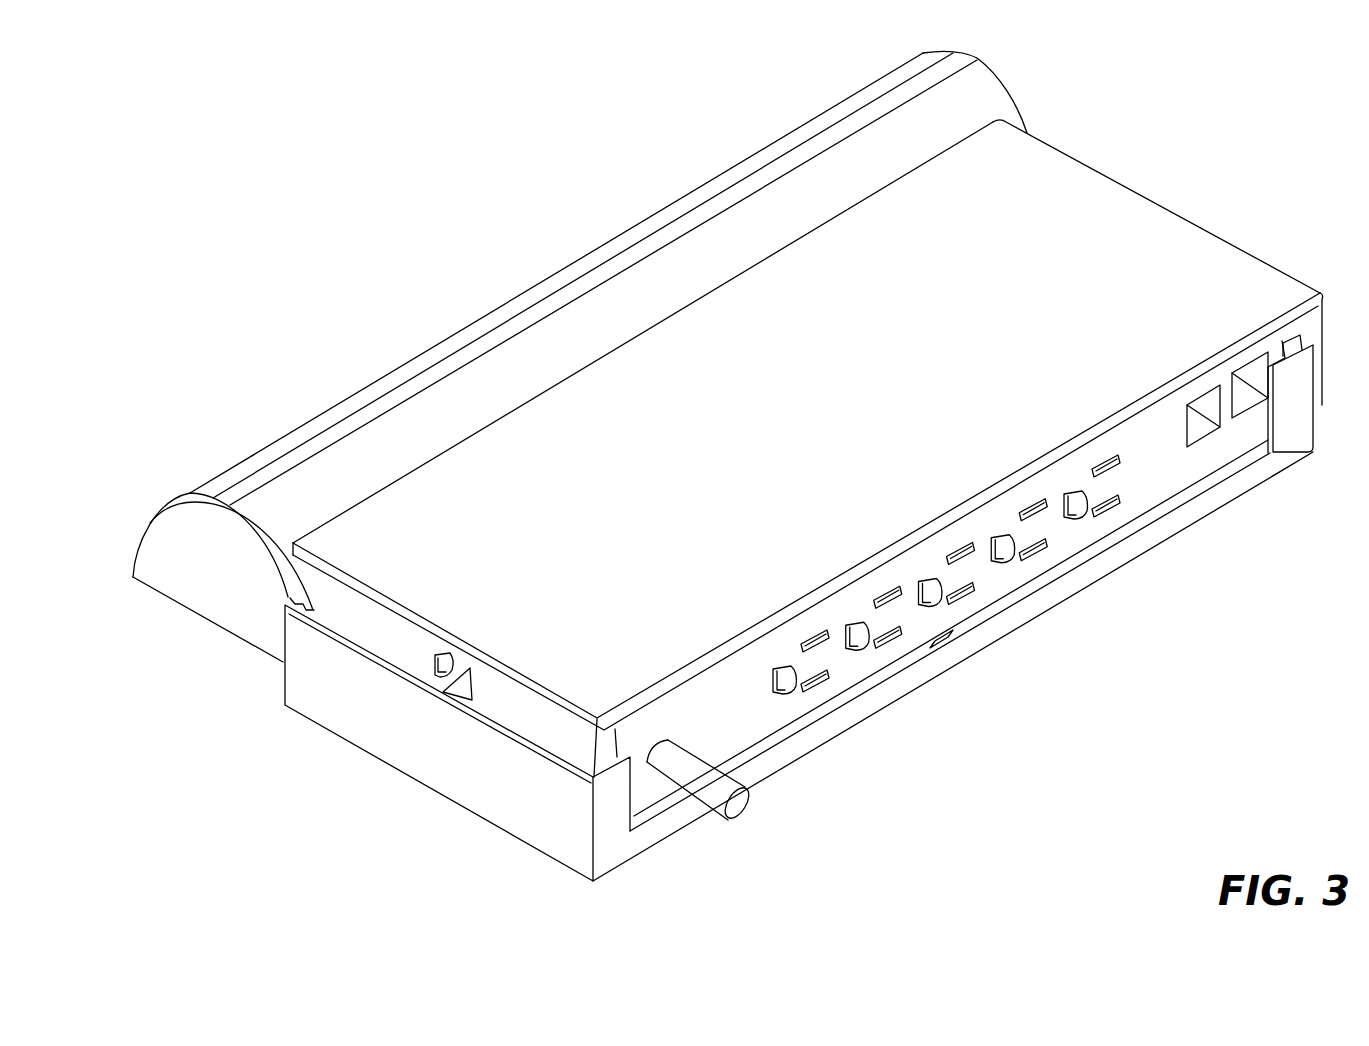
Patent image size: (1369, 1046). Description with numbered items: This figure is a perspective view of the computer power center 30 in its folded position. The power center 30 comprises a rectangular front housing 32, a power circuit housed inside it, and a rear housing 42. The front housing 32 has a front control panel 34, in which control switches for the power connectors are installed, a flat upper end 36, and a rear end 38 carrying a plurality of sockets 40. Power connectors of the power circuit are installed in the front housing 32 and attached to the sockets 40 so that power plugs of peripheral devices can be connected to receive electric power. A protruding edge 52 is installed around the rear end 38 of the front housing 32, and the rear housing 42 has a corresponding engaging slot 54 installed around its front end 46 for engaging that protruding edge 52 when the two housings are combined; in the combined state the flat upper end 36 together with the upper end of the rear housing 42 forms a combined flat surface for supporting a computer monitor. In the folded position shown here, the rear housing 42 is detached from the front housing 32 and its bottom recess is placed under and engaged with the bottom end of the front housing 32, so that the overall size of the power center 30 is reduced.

The computer power center 30 is at (269, 207).
The front housing 32 is at (1113, 227).
The front control panel 34 is at (603, 264).
The flat upper end 36 is at (812, 441).
The rear end 38 is at (770, 717).
The sockets 40 is at (885, 643).
The rear housing 42 is at (410, 740).
The front end 46 is at (283, 687).
The protruding edge 52 is at (592, 716).
The engaging slot 54 is at (290, 597).